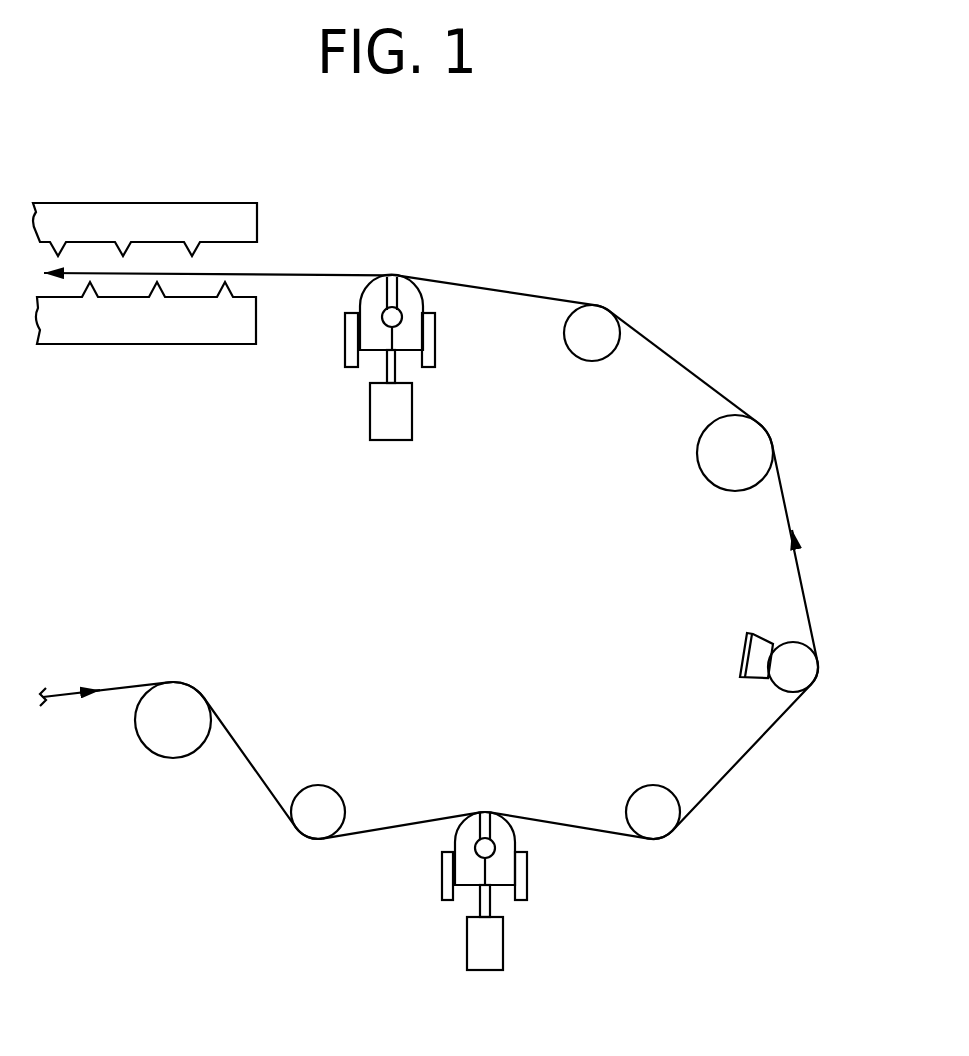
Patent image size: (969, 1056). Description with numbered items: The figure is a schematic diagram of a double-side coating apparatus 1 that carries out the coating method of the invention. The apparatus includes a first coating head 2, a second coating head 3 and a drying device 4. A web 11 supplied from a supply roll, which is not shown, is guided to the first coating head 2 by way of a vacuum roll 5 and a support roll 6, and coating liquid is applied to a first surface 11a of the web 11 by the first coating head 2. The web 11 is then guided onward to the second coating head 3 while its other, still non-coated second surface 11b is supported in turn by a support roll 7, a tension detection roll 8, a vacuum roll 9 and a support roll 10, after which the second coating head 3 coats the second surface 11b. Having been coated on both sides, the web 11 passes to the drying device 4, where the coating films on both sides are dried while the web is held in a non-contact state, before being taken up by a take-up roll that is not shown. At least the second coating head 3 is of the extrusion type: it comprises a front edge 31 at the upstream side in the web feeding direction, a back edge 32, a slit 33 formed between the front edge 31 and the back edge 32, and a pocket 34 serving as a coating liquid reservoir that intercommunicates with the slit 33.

The double-side coating apparatus 1 is at (748, 297).
The first coating head 2 is at (438, 878).
The second coating head 3 is at (396, 302).
The front edge 31 is at (407, 288).
The back edge 32 is at (375, 303).
The slit 33 is at (392, 303).
The pocket 34 is at (390, 318).
The drying device 4 is at (152, 352).
The vacuum roll 5 is at (162, 737).
The support roll 6 is at (328, 800).
The support roll 7 is at (643, 800).
The tension detection roll 8 is at (780, 677).
The vacuum roll 9 is at (713, 470).
The support roll 10 is at (588, 350).
The web 11 is at (429, 558).
The first surface 11a is at (360, 833).
The second surface 11b is at (677, 363).